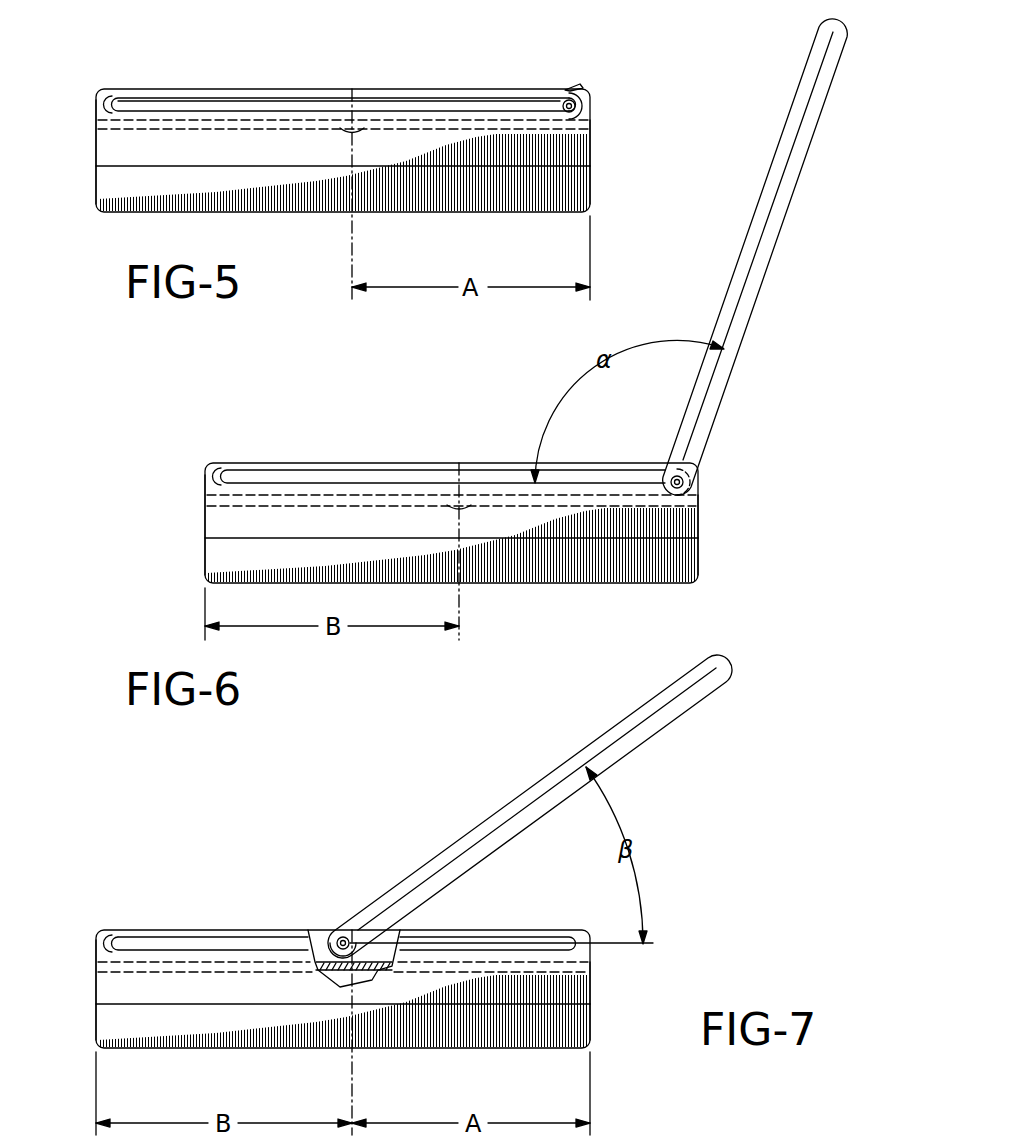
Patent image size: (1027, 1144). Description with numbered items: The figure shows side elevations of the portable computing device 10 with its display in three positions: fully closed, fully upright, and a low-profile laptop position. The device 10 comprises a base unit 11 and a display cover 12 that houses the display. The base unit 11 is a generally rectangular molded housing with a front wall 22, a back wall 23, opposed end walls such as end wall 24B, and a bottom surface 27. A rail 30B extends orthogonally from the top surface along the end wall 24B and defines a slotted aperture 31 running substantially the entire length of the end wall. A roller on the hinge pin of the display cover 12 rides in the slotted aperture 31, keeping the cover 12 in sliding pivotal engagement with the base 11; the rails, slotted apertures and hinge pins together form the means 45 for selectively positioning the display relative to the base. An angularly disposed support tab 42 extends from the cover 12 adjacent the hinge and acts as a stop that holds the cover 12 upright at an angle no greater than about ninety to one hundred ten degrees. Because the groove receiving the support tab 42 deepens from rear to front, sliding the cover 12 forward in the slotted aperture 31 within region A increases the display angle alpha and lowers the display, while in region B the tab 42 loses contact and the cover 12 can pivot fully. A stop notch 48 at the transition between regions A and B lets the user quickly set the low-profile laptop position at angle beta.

In FIG. 5, the portable computing device 10 is at (288, 80).
In FIG. 6, the portable computing device 10 is at (798, 358).
In FIG. 7, the portable computing device 10 is at (681, 859).
In FIG. 5, the base unit 11 is at (512, 200).
In FIG. 6, the base unit 11 is at (619, 578).
In FIG. 7, the base unit 11 is at (512, 1040).
In FIG. 5, the display cover 12 is at (416, 98).
In FIG. 6, the display cover 12 is at (798, 172).
In FIG. 7, the display cover 12 is at (667, 716).
In FIG. 5, the front wall 22 is at (96, 180).
In FIG. 6, the front wall 22 is at (205, 560).
In FIG. 7, the front wall 22 is at (96, 1018).
In FIG. 5, the back wall 23 is at (592, 185).
In FIG. 6, the back wall 23 is at (700, 567).
In FIG. 7, the back wall 23 is at (592, 1028).
In FIG. 5, the end wall 24B is at (558, 150).
In FIG. 6, the end wall 24B is at (668, 525).
In FIG. 7, the end wall 24B is at (558, 990).
In FIG. 5, the bottom surface 27 is at (412, 213).
In FIG. 6, the bottom surface 27 is at (521, 588).
In FIG. 7, the bottom surface 27 is at (412, 1051).
In FIG. 5, the rail 30B is at (122, 98).
In FIG. 6, the rail 30B is at (235, 470).
In FIG. 7, the rail 30B is at (122, 937).
In FIG. 5, the slotted aperture 31 is at (180, 96).
In FIG. 6, the slotted aperture 31 is at (292, 478).
In FIG. 7, the slotted aperture 31 is at (180, 938).
In FIG. 5, the support tab 42 is at (575, 86).
In FIG. 6, the means for selectively positioning the display 45 is at (712, 468).
In FIG. 7, the stop notch 48 is at (352, 965).